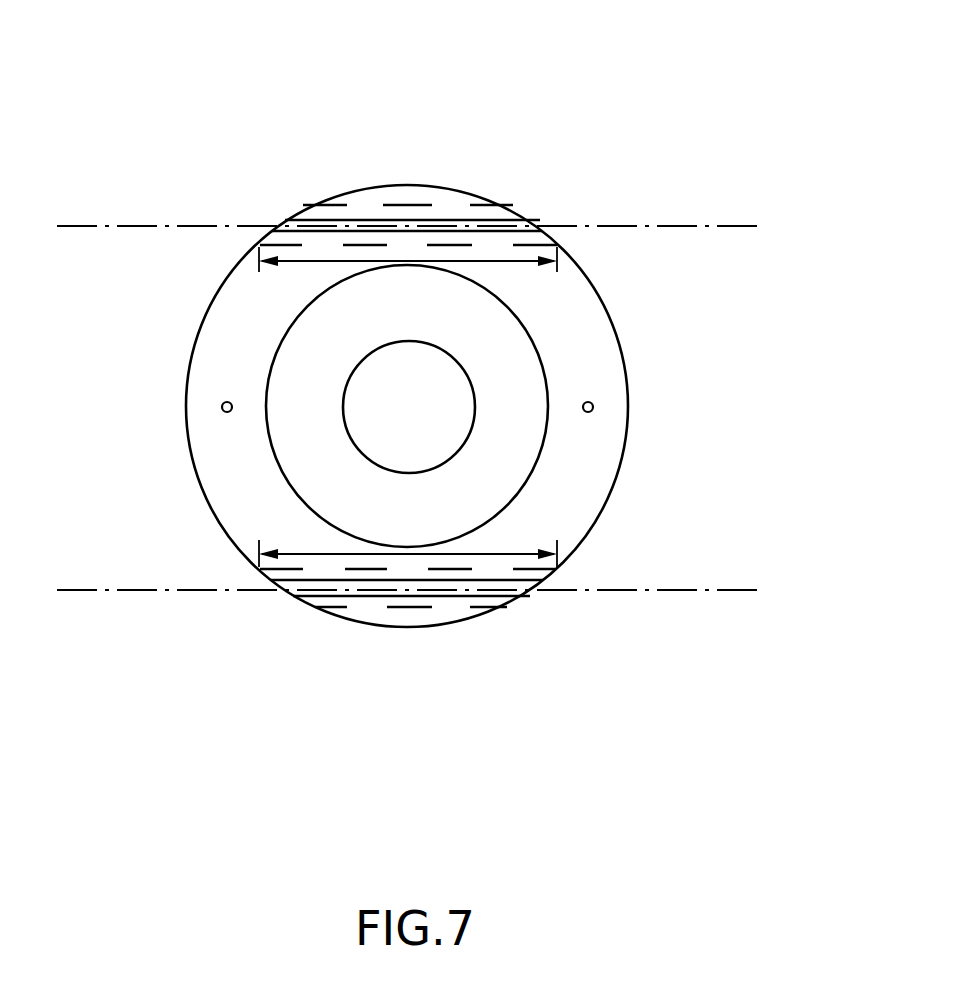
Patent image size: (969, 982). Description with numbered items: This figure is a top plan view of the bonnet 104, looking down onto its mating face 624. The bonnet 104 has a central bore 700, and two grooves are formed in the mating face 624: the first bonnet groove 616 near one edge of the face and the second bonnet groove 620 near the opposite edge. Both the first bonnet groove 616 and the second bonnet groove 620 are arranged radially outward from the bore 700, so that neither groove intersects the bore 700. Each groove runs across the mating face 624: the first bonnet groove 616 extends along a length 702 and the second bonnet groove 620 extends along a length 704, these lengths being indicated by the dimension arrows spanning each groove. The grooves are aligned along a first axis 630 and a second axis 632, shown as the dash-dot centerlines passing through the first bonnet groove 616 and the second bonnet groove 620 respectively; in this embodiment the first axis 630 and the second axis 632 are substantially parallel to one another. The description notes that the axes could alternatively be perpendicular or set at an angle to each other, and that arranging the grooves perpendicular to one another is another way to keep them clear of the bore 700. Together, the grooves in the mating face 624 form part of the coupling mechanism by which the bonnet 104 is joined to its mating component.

The bonnet 104 is at (543, 170).
The first bonnet groove 616 is at (303, 220).
The second bonnet groove 620 is at (296, 592).
The mating face 624 is at (593, 470).
The first axis 630 is at (108, 226).
The second axis 632 is at (660, 590).
The bore 700 is at (443, 402).
The length 702 is at (497, 263).
The length 704 is at (488, 552).